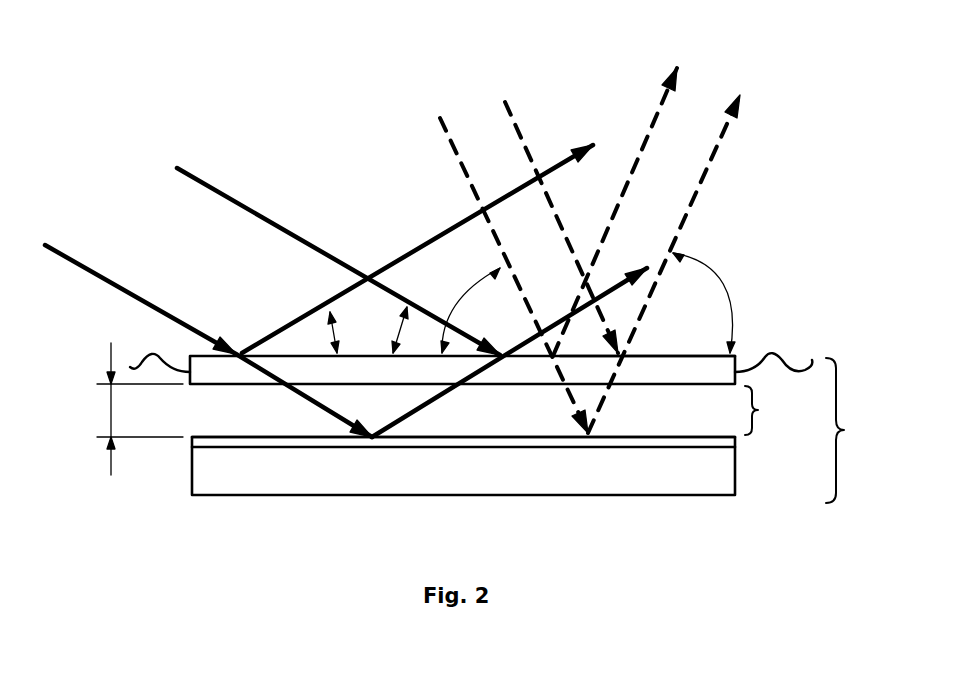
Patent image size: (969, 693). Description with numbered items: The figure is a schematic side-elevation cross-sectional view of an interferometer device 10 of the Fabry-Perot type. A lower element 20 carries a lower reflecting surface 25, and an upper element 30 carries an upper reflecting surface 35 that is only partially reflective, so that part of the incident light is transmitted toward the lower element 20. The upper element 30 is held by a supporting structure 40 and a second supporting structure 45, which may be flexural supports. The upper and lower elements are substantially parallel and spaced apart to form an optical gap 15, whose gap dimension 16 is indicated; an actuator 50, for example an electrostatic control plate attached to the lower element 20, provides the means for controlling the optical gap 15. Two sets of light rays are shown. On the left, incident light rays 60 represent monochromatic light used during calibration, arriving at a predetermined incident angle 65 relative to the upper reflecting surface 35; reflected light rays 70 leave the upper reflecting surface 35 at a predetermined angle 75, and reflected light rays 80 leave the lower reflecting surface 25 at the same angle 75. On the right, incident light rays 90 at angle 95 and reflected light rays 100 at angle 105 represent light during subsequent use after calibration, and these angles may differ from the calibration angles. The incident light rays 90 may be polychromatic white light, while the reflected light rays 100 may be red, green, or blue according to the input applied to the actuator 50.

The interferometer device 10 is at (848, 430).
The optical gap 15 is at (767, 410).
The gap dimension 16 is at (110, 410).
The lower element 20 is at (708, 445).
The lower reflecting surface 25 is at (300, 436).
The upper element 30 is at (222, 378).
The upper reflecting surface 35 is at (647, 354).
The supporting structure 40 is at (153, 352).
The second supporting structure 45 is at (772, 355).
The actuator 50 is at (272, 480).
The incident light rays 60 is at (101, 272).
The incident angle 65 is at (394, 332).
The reflected light rays 70 is at (453, 228).
The angle 75 is at (340, 328).
The reflected light rays 80 is at (433, 398).
The incident light rays 90 is at (453, 148).
The angle 95 is at (478, 290).
The reflected light rays 100 is at (658, 110).
The angle 105 is at (721, 282).